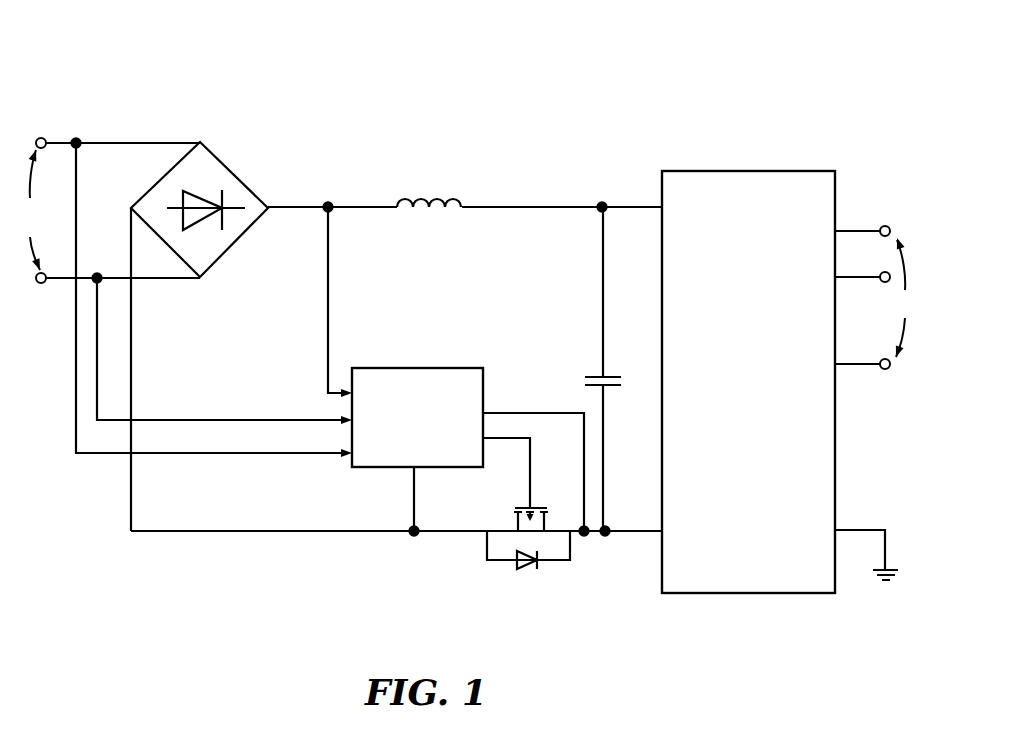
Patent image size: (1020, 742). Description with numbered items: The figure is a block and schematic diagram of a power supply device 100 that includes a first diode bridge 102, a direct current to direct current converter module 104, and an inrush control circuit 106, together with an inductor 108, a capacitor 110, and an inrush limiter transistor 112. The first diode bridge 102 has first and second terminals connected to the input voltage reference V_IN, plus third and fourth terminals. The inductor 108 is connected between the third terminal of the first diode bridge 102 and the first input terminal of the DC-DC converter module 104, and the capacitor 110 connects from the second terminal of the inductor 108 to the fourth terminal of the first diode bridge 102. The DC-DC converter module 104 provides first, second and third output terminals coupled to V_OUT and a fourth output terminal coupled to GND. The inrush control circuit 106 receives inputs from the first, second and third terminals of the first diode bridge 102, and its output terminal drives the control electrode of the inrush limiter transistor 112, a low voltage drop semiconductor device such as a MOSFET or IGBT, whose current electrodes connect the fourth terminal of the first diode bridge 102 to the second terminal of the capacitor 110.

The power supply device 100 is at (649, 112).
The first diode bridge 102 is at (224, 160).
The DC-DC converter module 104 is at (708, 170).
The inrush control circuit 106 is at (390, 365).
The inductor 108 is at (422, 200).
The capacitor 110 is at (597, 372).
The inrush limiter transistor 112 is at (527, 509).